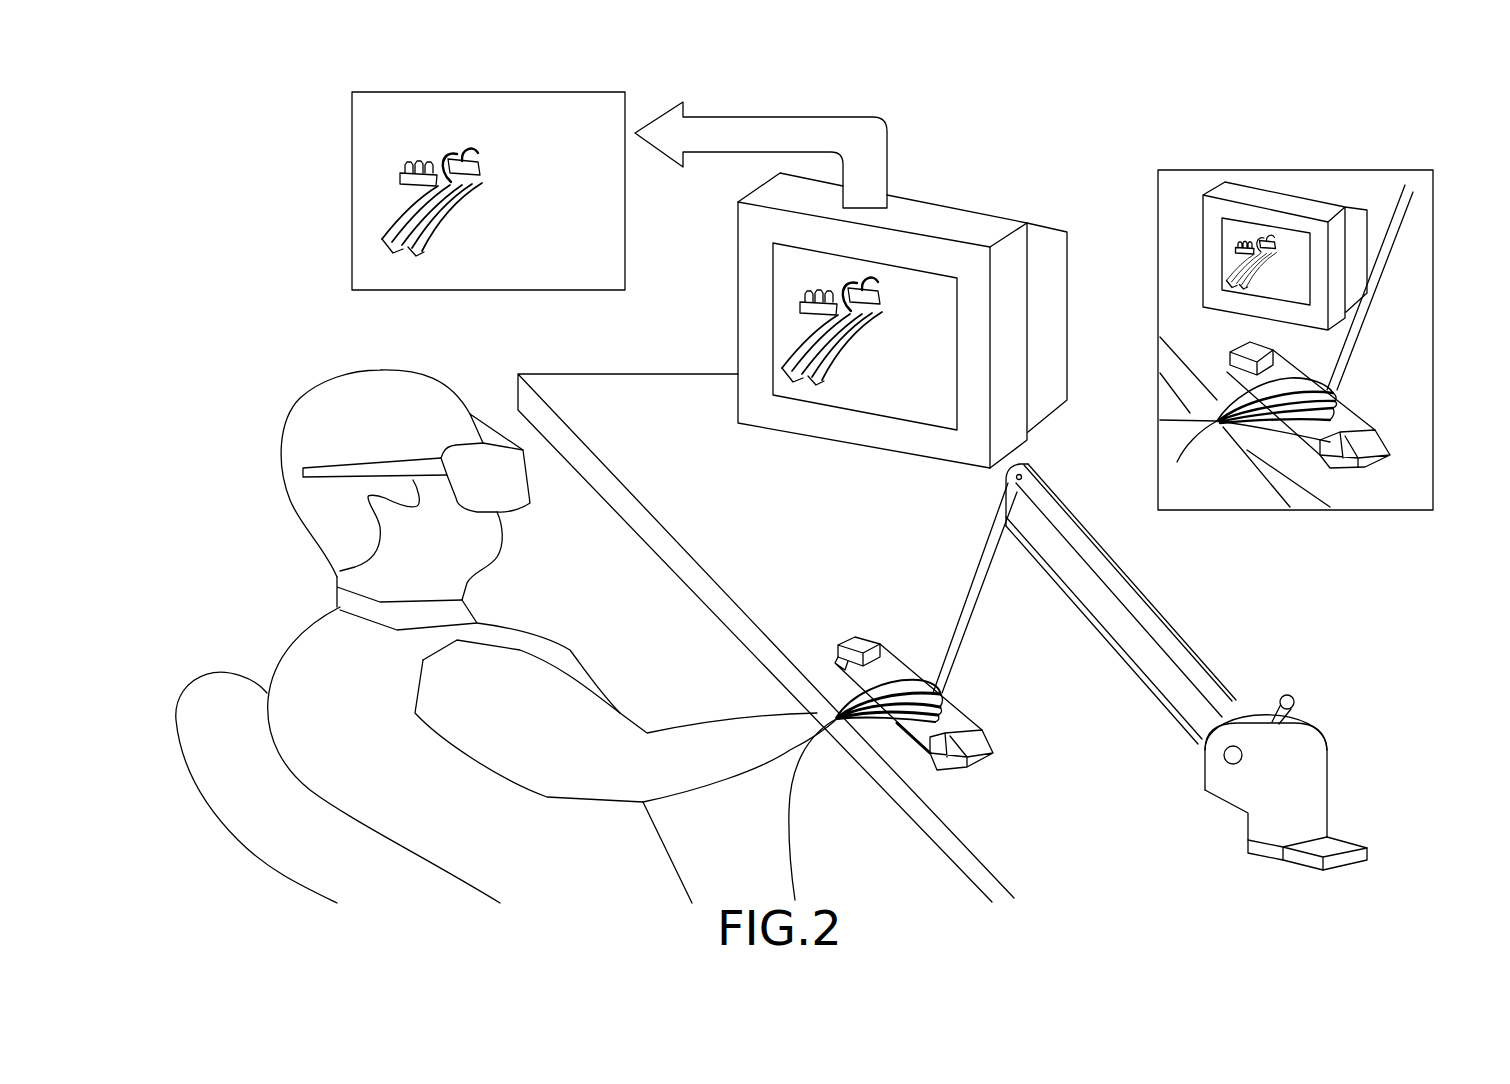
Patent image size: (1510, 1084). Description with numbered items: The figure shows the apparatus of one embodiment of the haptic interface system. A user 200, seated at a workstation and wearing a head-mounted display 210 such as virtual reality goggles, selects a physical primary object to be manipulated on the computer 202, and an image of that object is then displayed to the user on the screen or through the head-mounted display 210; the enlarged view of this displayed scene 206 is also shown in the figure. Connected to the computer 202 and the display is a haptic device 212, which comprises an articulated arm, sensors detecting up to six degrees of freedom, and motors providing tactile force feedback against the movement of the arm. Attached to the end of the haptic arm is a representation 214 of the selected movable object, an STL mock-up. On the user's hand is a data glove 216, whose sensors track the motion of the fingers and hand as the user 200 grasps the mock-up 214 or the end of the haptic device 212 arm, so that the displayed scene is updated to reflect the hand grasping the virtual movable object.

The user 200 is at (313, 670).
The computer 202 is at (942, 258).
The virtual image of surgical instrument 206 is at (803, 293).
The head-mounted display 210 is at (497, 490).
The haptic device 212 is at (1327, 810).
The representation of the movable object 214 is at (970, 760).
The data glove 216 is at (853, 725).